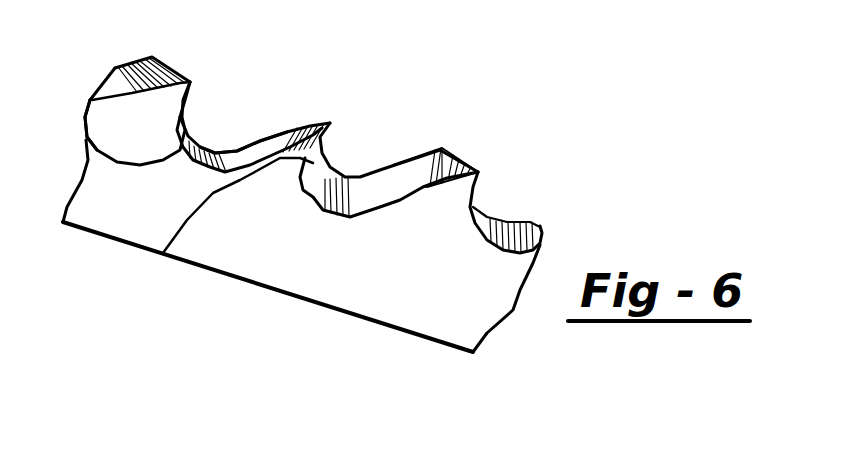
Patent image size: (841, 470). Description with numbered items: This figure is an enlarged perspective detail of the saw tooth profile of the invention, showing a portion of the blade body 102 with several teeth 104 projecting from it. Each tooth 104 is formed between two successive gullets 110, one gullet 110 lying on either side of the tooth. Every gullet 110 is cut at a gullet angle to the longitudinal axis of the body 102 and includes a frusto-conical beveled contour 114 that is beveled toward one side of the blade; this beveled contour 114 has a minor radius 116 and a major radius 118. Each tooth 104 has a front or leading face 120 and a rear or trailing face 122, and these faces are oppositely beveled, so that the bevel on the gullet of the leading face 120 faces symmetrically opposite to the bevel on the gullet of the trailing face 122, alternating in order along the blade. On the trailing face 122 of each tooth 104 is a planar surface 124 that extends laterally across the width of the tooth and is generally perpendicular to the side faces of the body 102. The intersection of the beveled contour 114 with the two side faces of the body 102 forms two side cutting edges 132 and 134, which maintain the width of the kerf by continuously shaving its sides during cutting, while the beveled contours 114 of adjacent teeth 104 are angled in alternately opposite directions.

The body 102 is at (248, 265).
The teeth 104 is at (158, 112).
The gullet 110 is at (229, 114).
The beveled contour 114 is at (325, 180).
The minor radius 116 is at (95, 152).
The major radius 118 is at (225, 148).
The leading face 120 is at (163, 253).
The trailing face 122 is at (398, 190).
The planar surface 124 is at (428, 154).
The side cutting edge 132 is at (327, 167).
The side cutting edge 134 is at (312, 188).